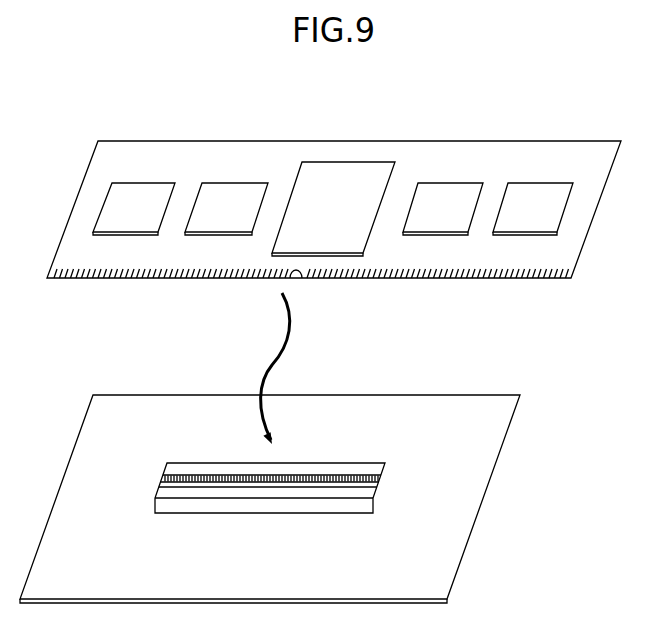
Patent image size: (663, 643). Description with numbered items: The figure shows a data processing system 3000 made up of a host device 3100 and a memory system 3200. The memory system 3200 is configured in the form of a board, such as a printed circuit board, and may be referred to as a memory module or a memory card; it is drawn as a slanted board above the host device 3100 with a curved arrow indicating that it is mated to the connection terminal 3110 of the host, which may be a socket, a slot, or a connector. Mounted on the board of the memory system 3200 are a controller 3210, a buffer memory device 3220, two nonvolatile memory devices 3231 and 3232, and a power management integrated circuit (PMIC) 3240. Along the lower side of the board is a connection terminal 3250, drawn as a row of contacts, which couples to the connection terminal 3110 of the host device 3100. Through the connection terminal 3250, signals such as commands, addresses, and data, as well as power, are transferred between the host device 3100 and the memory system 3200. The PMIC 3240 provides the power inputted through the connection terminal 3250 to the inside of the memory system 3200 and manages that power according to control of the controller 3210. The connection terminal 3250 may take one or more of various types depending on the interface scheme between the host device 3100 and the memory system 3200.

The data processing system 3000 is at (192, 111).
The memory system 3200 is at (152, 172).
The controller 3210 is at (354, 222).
The buffer memory device 3220 is at (213, 236).
The nonvolatile memory device 3231 is at (437, 236).
The nonvolatile memory device 3232 is at (530, 236).
The power management integrated circuit 3240 is at (130, 236).
The connection terminal 3250 is at (83, 279).
The host device 3100 is at (84, 596).
The connection terminal 3110 is at (400, 459).